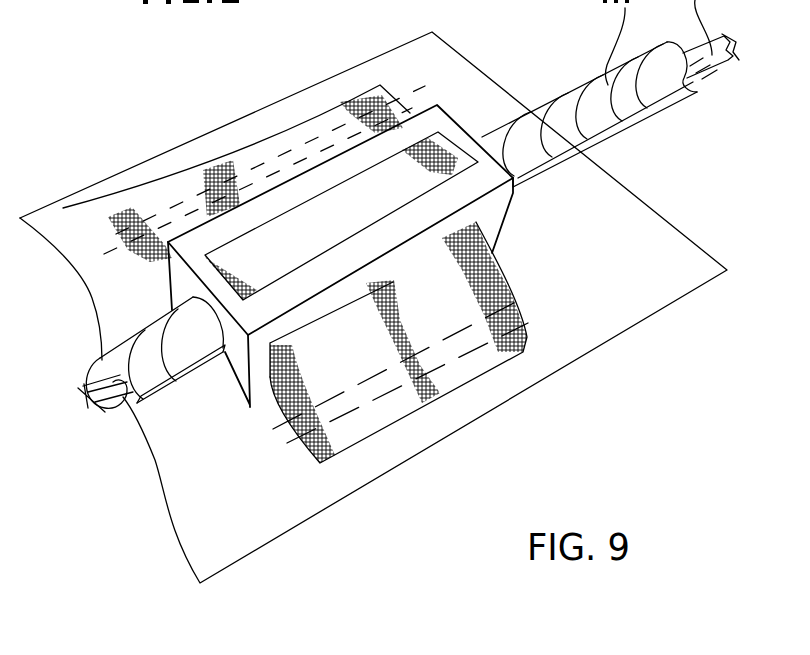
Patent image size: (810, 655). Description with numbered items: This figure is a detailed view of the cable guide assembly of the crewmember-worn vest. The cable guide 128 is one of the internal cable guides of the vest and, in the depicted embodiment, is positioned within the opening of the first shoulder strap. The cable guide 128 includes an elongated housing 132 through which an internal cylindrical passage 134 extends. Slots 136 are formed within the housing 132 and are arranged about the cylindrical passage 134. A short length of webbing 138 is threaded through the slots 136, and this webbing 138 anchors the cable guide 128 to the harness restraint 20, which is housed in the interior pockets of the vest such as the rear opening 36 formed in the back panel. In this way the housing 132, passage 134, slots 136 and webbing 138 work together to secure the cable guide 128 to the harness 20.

The harness restraint 20 is at (80, 220).
The rear opening 36 is at (495, 216).
The cable guide 128 is at (182, 287).
The elongated housing 132 is at (193, 240).
The internal cylindrical passage 134 is at (222, 360).
The slots 136 is at (430, 157).
The webbing 138 is at (377, 100).